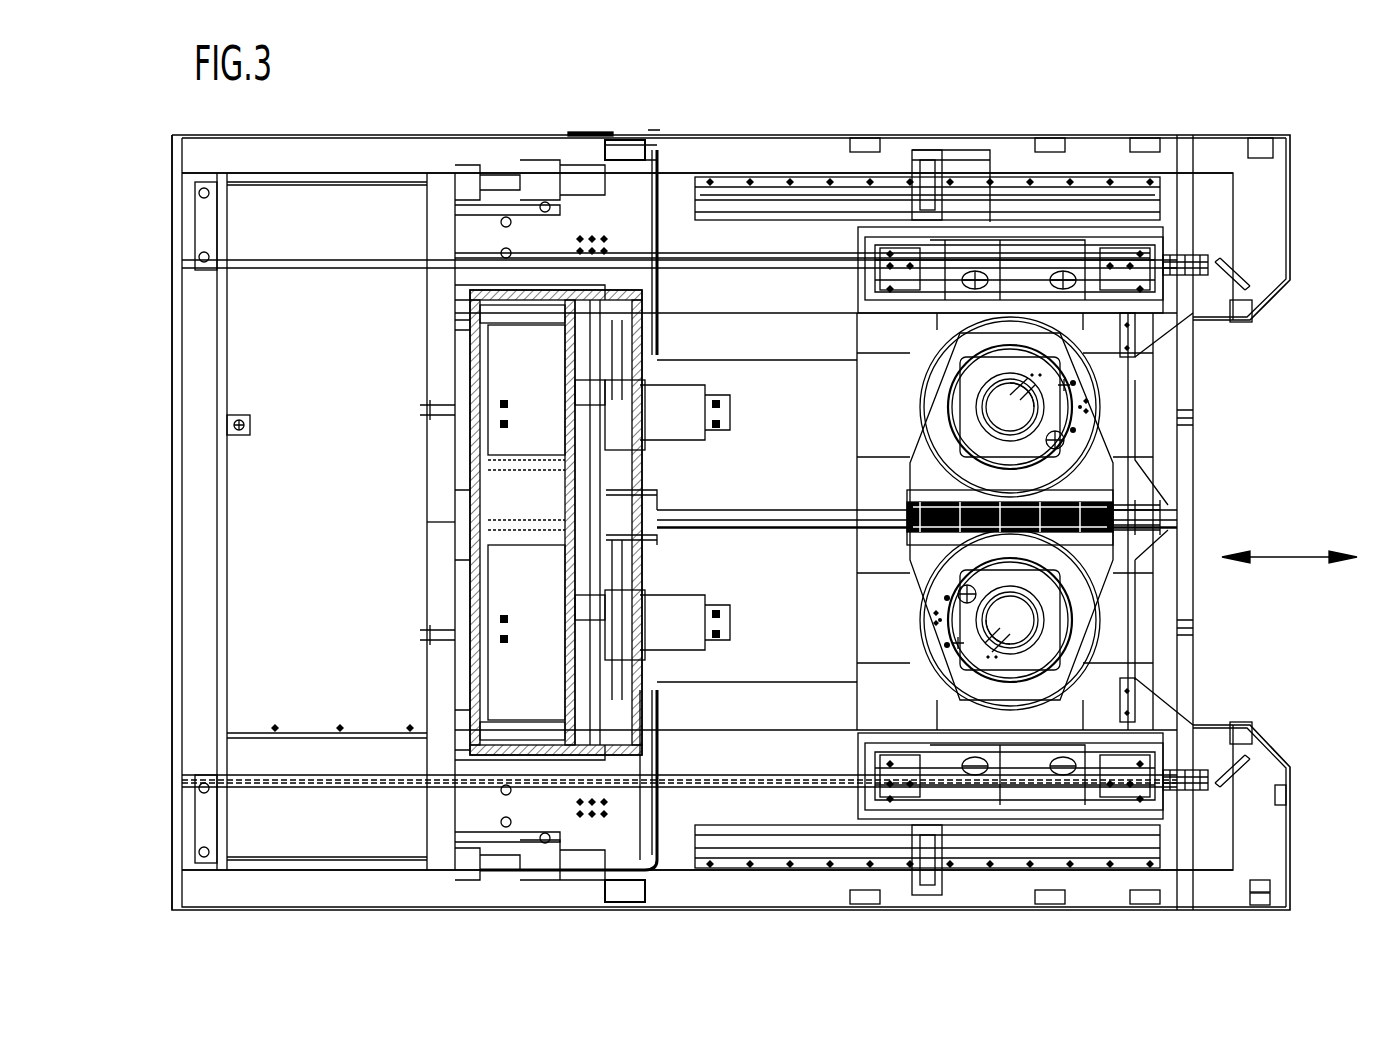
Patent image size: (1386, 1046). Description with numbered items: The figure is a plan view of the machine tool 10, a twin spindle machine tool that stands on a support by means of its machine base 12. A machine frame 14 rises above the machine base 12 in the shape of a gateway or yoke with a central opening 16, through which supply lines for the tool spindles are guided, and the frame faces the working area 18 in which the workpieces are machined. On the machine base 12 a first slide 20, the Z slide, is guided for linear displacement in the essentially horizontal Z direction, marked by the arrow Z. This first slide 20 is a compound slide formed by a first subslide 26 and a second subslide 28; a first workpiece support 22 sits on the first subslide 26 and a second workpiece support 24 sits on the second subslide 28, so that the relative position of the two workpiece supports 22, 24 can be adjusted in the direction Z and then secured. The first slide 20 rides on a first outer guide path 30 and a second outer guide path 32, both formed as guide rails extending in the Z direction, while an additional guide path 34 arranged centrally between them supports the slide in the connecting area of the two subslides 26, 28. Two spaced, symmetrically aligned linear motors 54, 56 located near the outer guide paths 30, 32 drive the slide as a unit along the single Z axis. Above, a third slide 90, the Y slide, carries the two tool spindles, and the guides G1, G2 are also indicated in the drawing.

The machine tool 10 is at (602, 122).
The machine base 12 is at (728, 908).
The machine frame 14 is at (460, 136).
The central opening 16 is at (305, 595).
The working area 18 is at (796, 422).
The first slide 20 is at (912, 278).
The first workpiece support 22 is at (1085, 410).
The second workpiece support 24 is at (1060, 630).
The first subslide 26 is at (1133, 378).
The second subslide 28 is at (1140, 710).
The first outer guide path 30 is at (1082, 780).
The second outer guide path 32 is at (1062, 250).
The additional guide path 34 is at (1168, 518).
The motor 54 is at (878, 855).
The motor 56 is at (812, 200).
The third slide 90 is at (527, 642).
The first guide G1 is at (1157, 388).
The second guide G2 is at (1157, 658).
The Z direction Z is at (1295, 557).